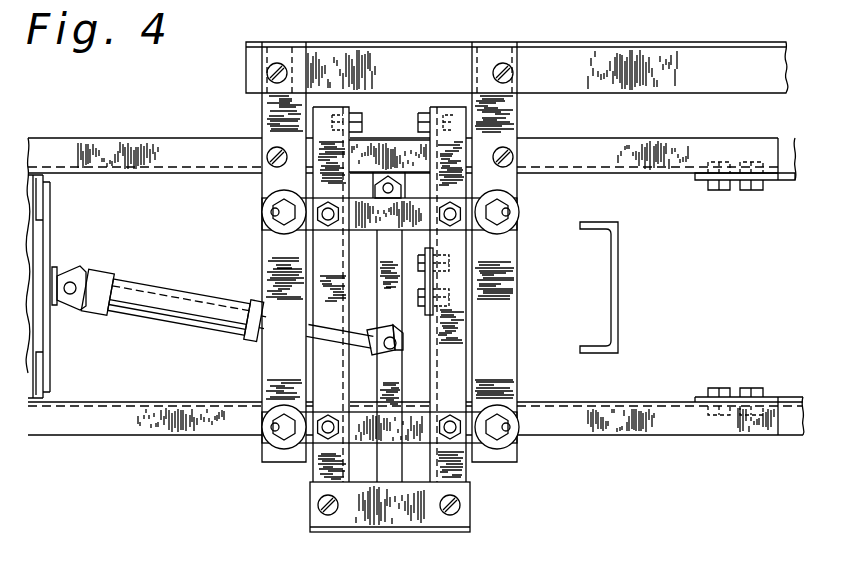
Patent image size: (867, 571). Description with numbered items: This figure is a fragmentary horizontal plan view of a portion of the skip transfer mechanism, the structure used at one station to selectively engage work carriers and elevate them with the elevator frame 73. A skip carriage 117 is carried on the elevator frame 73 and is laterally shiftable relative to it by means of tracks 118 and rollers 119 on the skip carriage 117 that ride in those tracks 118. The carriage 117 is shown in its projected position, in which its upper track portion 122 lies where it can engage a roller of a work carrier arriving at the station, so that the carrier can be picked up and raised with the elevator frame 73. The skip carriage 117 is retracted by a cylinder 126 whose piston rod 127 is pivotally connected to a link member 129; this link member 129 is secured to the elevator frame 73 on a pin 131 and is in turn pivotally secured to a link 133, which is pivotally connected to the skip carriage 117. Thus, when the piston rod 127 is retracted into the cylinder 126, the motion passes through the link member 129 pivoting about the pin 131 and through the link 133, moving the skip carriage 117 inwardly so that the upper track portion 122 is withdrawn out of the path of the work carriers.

The elevator frame 73 is at (194, 112).
The skip carriage 117 is at (456, 306).
The tracks 118 is at (520, 351).
The rollers 119 is at (496, 192).
The upper track portion 122 is at (427, 512).
The cylinder 126 is at (186, 266).
The piston rod 127 is at (352, 338).
The link member 129 is at (388, 246).
The pin 131 is at (389, 183).
The link 133 is at (388, 373).